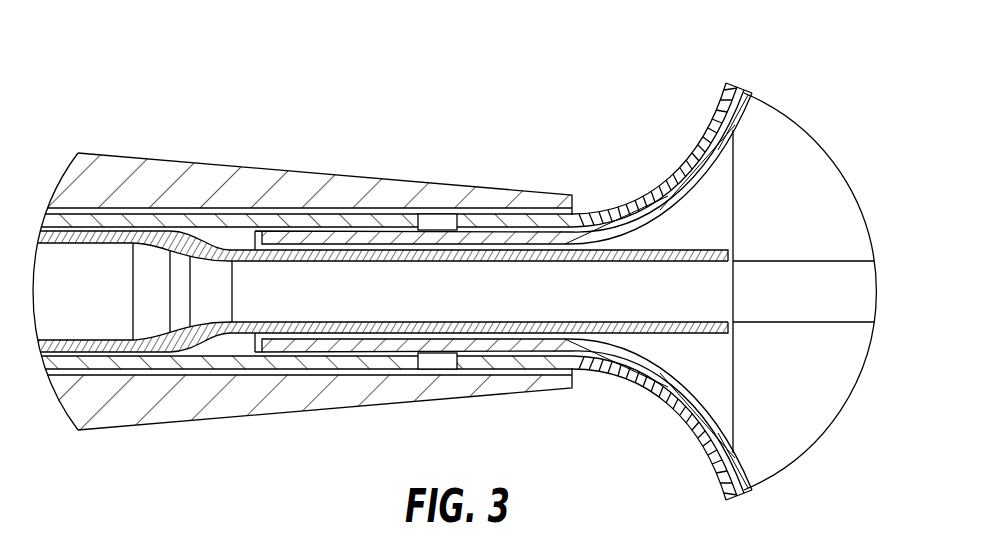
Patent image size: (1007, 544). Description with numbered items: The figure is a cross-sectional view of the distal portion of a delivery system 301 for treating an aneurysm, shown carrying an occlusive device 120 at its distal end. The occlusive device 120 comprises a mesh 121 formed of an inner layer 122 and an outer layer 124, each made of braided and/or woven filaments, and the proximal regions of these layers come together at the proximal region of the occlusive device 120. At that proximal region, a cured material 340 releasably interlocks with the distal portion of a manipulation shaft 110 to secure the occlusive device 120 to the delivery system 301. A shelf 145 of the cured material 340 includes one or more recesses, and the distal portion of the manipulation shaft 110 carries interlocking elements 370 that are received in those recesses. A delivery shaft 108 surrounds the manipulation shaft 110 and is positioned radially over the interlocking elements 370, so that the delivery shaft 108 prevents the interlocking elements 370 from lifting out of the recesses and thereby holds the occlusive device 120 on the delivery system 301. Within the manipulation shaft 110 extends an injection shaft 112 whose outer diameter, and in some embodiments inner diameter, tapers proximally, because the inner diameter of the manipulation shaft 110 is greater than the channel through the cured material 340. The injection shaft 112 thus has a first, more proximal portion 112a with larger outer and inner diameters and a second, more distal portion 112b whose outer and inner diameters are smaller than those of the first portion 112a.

The delivery system 301 is at (120, 60).
The delivery shaft 108 is at (88, 180).
The manipulation shaft 110 is at (147, 218).
The injection shaft 112 is at (122, 240).
The first portion of the injection shaft 112a is at (82, 237).
The second portion of the injection shaft 112b is at (353, 258).
The shelf 145 is at (307, 237).
The interlocking elements 370 is at (394, 213).
The cured material 340 is at (443, 220).
The occlusive device 120 is at (514, 127).
The mesh 121 is at (702, 129).
The inner layer 122 is at (746, 92).
The outer layer 124 is at (615, 214).